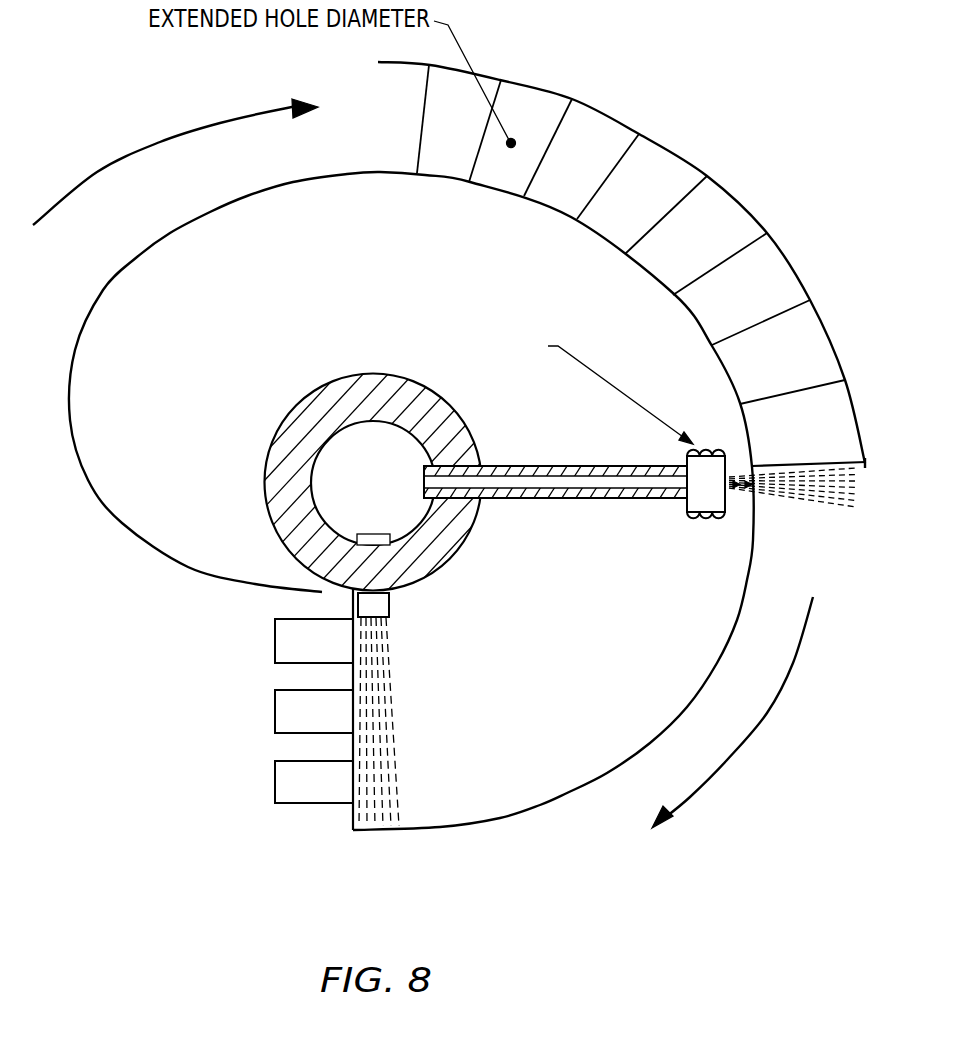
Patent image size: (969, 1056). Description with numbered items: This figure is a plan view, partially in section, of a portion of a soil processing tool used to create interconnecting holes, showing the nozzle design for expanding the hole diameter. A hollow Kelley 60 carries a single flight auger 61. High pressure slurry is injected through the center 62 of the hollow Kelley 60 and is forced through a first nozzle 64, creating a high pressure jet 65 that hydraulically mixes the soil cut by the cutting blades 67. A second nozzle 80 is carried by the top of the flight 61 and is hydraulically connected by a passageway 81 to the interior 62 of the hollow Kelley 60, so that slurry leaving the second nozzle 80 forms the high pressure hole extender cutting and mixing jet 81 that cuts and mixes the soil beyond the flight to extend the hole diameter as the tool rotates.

The hollow Kelley 60 is at (264, 460).
The single flight auger 61 is at (97, 343).
The center of hollow Kelley 62 is at (390, 493).
The first nozzle 64 is at (514, 624).
The high pressure jet 65 is at (415, 722).
The cutting blades 67 is at (268, 755).
The second nozzle 80 is at (695, 508).
The passageway 81 is at (589, 424).